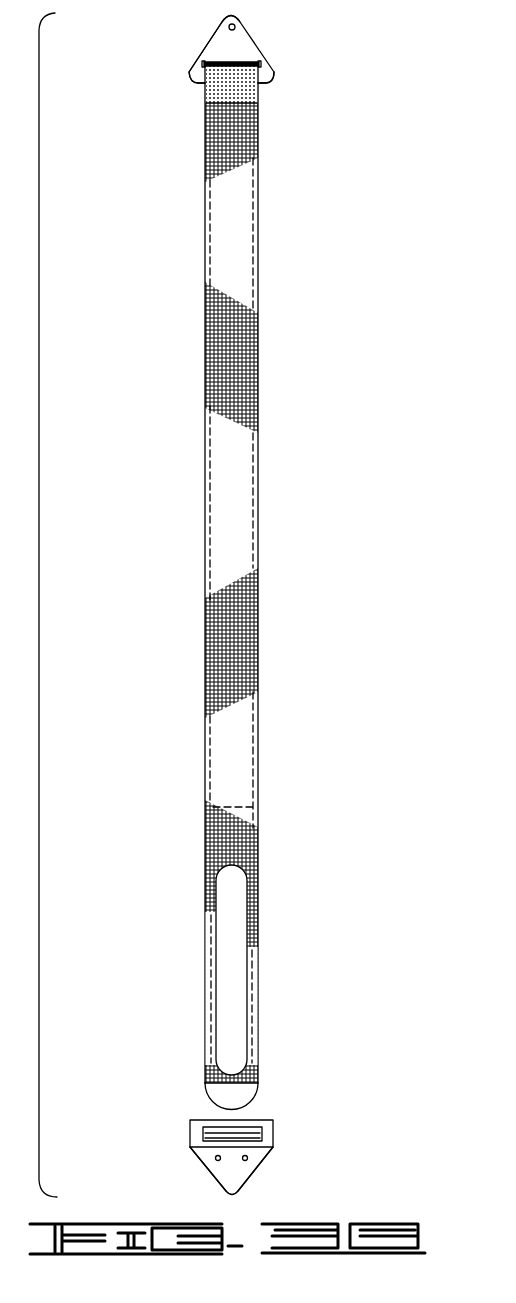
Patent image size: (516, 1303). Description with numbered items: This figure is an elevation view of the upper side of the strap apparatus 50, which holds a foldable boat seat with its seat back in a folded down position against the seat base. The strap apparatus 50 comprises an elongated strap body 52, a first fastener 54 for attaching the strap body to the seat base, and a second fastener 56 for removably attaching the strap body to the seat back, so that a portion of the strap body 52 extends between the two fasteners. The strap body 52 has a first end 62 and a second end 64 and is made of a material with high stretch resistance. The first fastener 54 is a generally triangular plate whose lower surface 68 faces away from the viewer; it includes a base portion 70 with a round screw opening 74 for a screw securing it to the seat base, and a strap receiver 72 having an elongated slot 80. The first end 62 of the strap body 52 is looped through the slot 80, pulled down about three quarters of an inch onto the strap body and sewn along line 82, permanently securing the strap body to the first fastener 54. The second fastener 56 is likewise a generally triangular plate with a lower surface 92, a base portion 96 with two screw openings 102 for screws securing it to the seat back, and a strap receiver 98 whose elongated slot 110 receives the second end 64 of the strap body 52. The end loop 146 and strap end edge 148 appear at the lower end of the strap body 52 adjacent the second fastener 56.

The strap apparatus 50 is at (350, 62).
The strap body 52 is at (238, 252).
The first fastener 54 is at (255, 45).
The second fastener 56 is at (268, 1127).
The first end 62 is at (245, 95).
The second end 64 is at (255, 1075).
The lower surface 68 is at (218, 44).
The base portion 70 is at (220, 33).
The strap receiver 72 is at (265, 76).
The screw opening 74 is at (236, 26).
The slot 80 is at (207, 63).
The sewing line 82 is at (212, 98).
The lower surface 92 is at (193, 1140).
The base portion 96 is at (205, 1156).
The strap receiver 98 is at (273, 1149).
The screw openings 102 is at (218, 1162).
The slot 110 is at (222, 1135).
The loop 146 is at (243, 1093).
The strap end edge 148 is at (210, 1088).